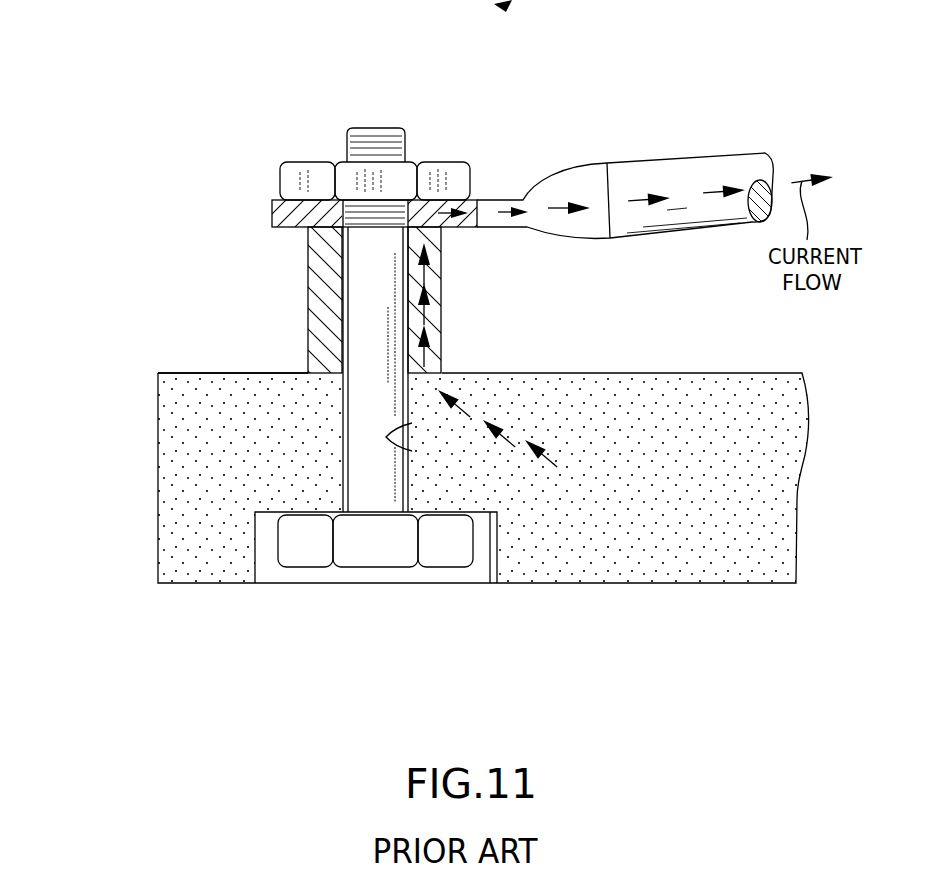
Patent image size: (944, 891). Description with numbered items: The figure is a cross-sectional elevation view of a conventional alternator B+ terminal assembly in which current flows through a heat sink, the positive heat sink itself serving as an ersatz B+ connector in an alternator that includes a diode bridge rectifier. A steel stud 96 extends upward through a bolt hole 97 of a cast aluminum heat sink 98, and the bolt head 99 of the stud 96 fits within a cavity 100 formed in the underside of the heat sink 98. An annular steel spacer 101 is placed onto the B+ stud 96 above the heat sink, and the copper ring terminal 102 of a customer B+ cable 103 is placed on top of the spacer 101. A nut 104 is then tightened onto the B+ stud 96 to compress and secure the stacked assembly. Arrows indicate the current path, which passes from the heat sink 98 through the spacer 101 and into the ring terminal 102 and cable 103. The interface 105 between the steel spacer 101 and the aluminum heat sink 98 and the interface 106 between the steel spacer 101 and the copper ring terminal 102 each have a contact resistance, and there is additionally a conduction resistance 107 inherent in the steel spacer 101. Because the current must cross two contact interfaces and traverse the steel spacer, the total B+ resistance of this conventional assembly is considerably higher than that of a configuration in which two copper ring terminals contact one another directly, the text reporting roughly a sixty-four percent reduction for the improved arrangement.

The steel stud 96 is at (345, 143).
The bolt hole 97 is at (412, 451).
The cast aluminum heat sink 98 is at (678, 373).
The bolt head 99 is at (367, 553).
The cavity 100 is at (495, 557).
The annular steel spacer 101 is at (312, 283).
The copper ring terminal 102 is at (521, 200).
The customer B+ cable 103 is at (706, 172).
The nut 104 is at (473, 178).
The interface 105 is at (232, 371).
The interface 106 is at (280, 234).
The conduction resistance 107 is at (322, 327).